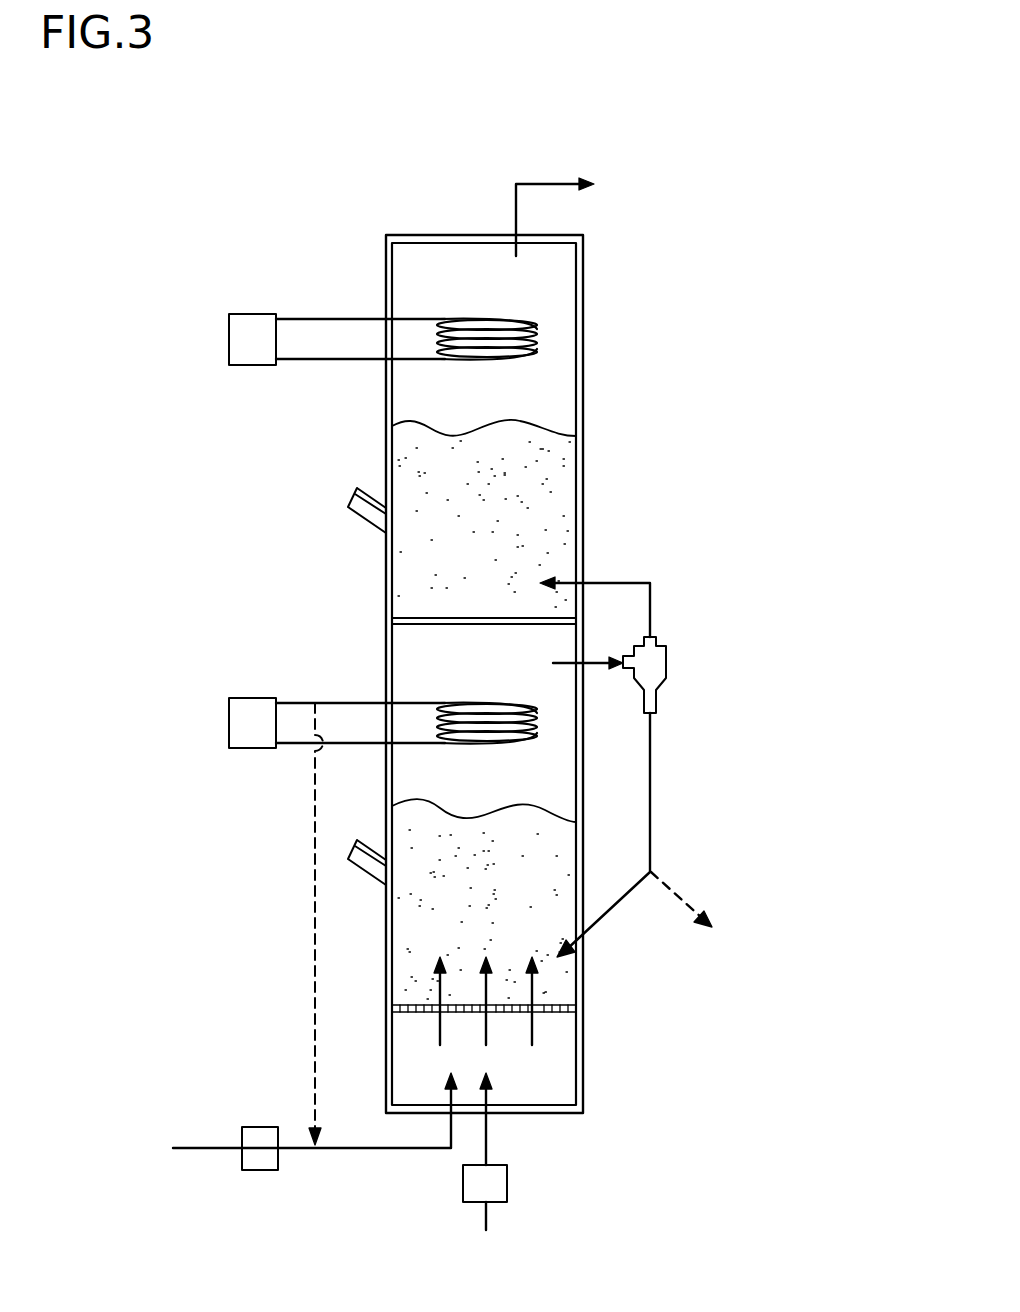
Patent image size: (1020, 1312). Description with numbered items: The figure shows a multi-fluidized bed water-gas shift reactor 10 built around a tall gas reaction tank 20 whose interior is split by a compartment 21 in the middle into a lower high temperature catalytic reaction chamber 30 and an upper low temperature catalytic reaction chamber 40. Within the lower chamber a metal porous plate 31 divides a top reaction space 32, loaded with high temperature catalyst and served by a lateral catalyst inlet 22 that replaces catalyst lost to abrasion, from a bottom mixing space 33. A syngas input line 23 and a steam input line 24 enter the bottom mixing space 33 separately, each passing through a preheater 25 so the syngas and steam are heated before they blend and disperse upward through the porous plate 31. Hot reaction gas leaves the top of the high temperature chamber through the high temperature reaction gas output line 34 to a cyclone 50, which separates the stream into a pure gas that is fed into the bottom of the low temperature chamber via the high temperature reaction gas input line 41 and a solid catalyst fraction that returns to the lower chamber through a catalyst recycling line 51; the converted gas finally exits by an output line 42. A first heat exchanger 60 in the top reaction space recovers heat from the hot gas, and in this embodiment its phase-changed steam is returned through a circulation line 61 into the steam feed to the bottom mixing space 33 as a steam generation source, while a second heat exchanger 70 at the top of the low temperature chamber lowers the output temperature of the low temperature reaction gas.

The multi-fluidized bed water-gas shift reactor 10 is at (668, 275).
The gas reaction tank 20 is at (604, 324).
The compartment 21 is at (417, 624).
The catalyst inlet 22 is at (355, 517).
The syngas input line 23 is at (490, 1143).
The steam input line 24 is at (405, 1148).
The preheater 25 is at (260, 1170).
The high temperature catalytic reaction chamber 30 is at (200, 943).
The porous plate 31 is at (555, 1012).
The top reaction space 32 is at (407, 830).
The bottom mixing space 33 is at (407, 1055).
The high temperature reaction gas output line 34 is at (595, 655).
The low temperature catalytic reaction chamber 40 is at (555, 391).
The high temperature reaction gas input line 41 is at (618, 583).
The output line 42 is at (538, 182).
The cyclone 50 is at (655, 665).
The catalyst recycling line 51 is at (620, 900).
The first heat exchanger 60 is at (260, 718).
The circulation line 61 is at (313, 1055).
The second heat exchanger 70 is at (262, 330).